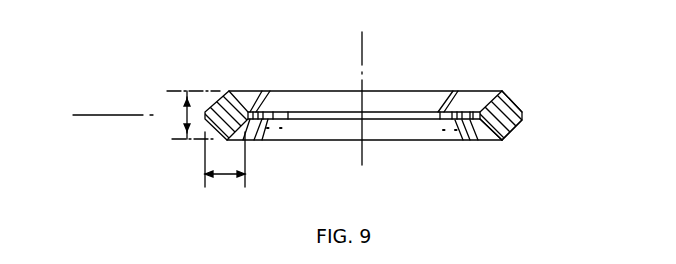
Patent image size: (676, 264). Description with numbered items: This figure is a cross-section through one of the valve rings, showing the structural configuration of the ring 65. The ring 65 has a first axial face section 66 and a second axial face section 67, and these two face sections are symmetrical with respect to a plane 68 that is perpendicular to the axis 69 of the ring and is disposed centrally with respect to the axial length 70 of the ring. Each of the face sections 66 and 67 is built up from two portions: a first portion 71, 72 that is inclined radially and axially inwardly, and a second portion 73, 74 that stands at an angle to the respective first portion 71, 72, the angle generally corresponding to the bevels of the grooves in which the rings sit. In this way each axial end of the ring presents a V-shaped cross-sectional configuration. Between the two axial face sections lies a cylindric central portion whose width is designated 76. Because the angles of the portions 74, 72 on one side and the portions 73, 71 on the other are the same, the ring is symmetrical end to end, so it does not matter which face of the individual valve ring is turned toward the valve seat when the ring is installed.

The ring 65 is at (507, 66).
The first axial face section 66 is at (222, 70).
The second axial face section 67 is at (501, 149).
The plane 68 is at (89, 114).
The axis 69 is at (363, 37).
The axial length 70 is at (185, 110).
The first portion 71 is at (310, 100).
The first portion 72 is at (308, 130).
The second portion 73 is at (510, 97).
The second portion 74 is at (512, 135).
The width 76 is at (225, 177).